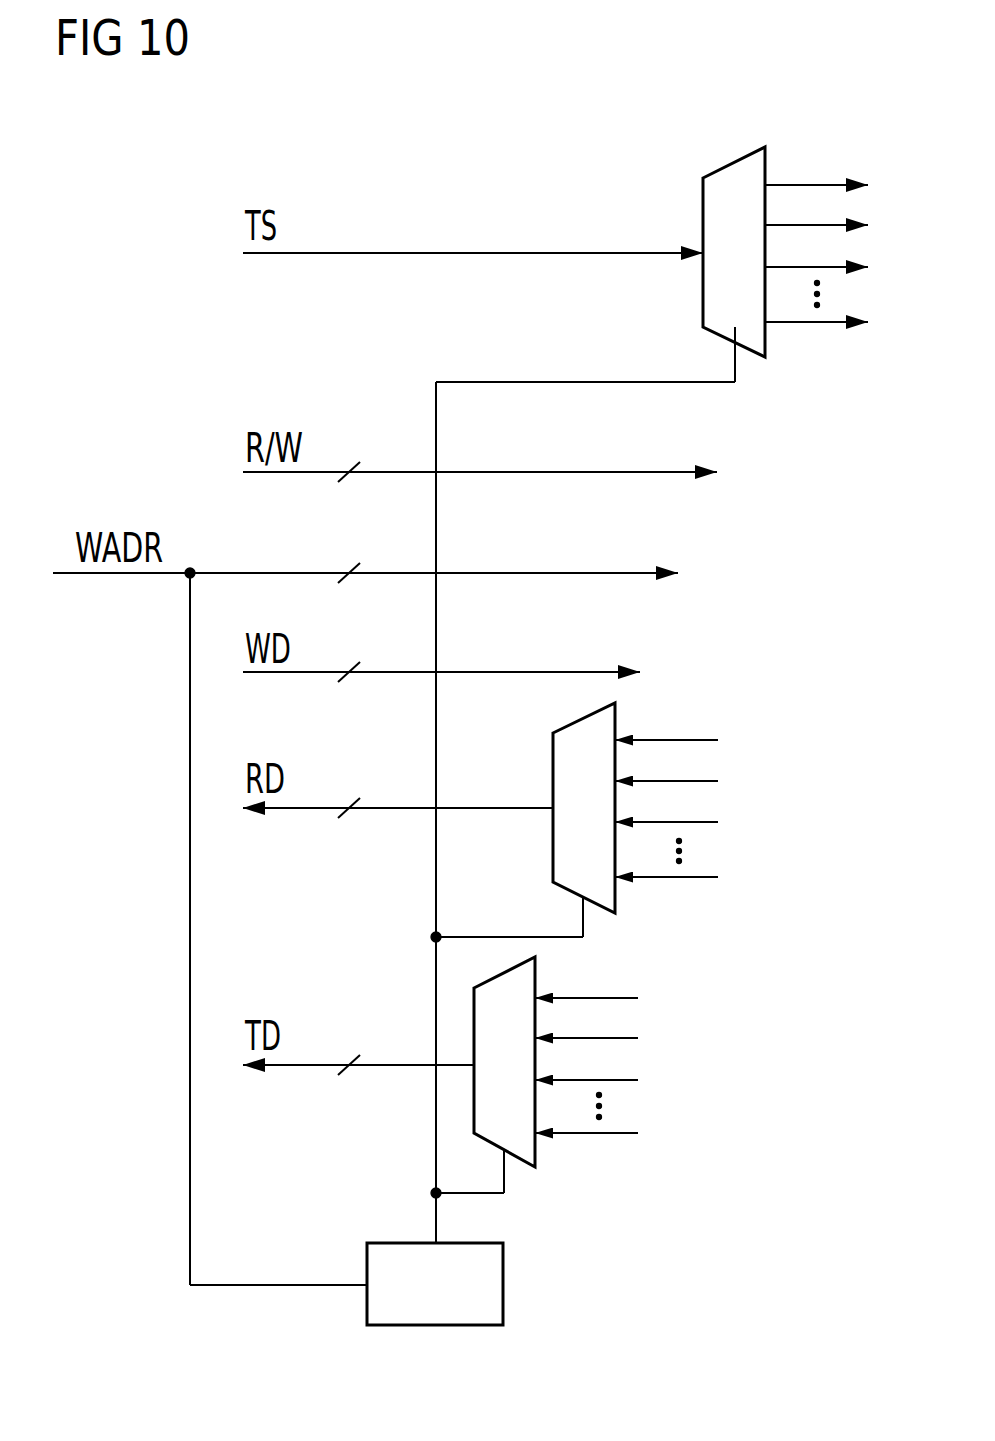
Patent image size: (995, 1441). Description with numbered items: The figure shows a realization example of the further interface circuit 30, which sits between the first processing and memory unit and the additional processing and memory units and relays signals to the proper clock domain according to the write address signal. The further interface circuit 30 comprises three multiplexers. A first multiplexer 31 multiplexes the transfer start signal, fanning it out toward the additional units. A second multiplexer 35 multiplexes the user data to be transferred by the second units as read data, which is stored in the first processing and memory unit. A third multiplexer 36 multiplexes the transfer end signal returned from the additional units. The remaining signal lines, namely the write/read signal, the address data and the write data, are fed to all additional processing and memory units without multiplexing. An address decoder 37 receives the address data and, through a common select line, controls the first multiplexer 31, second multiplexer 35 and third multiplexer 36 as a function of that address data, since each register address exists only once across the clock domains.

The further interface circuit 30 is at (215, 150).
The first multiplexer 31 is at (735, 165).
The second multiplexer 35 is at (553, 845).
The third multiplexer 36 is at (538, 977).
The address decoder 37 is at (505, 1285).